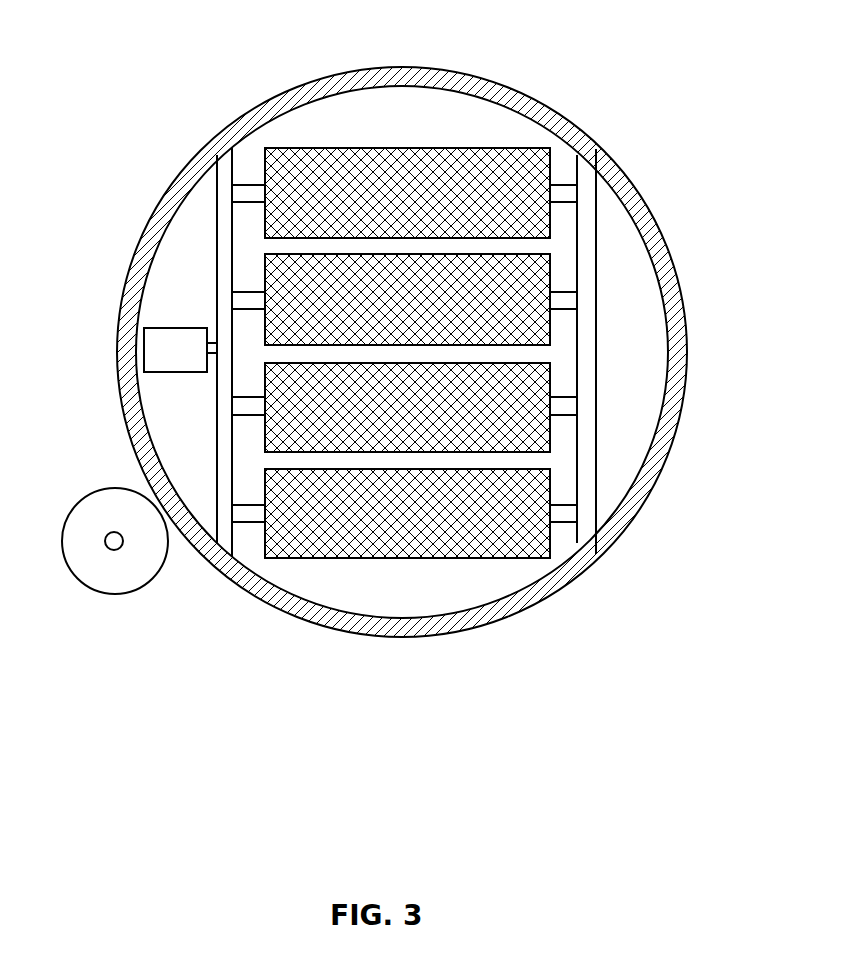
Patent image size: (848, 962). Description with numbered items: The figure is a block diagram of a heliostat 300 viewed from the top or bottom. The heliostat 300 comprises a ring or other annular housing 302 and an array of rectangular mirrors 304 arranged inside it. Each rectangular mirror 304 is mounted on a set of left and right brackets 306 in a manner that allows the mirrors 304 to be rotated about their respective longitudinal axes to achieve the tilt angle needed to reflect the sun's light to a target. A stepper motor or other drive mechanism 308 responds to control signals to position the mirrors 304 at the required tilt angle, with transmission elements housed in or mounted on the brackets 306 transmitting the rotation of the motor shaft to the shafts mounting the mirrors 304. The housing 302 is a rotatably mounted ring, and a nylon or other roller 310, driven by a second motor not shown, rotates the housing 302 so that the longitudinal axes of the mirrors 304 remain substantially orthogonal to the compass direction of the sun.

The heliostat 300 is at (99, 35).
The annular housing 302 is at (659, 263).
The rectangular mirrors 304 is at (363, 173).
The brackets 306 is at (597, 376).
The drive mechanism 308 is at (180, 353).
The roller 310 is at (87, 518).